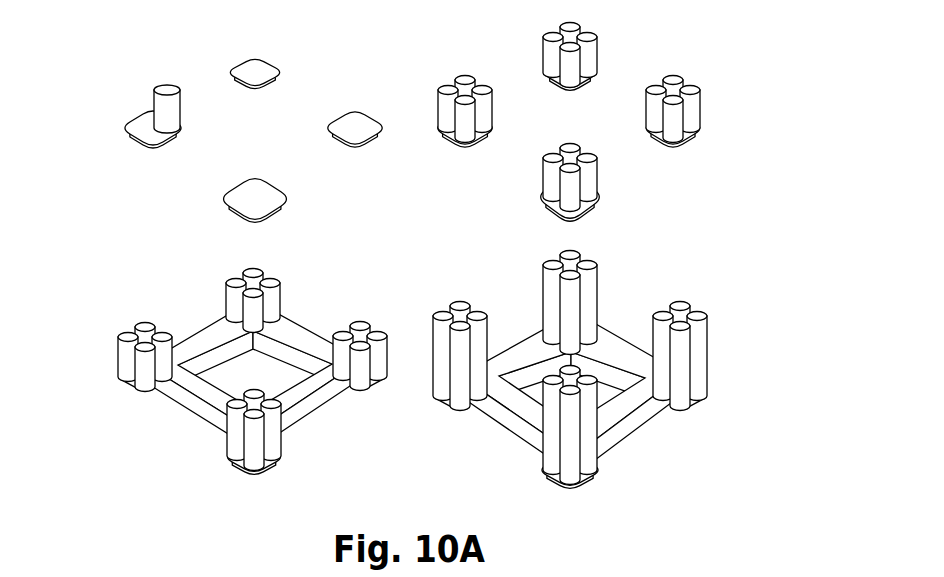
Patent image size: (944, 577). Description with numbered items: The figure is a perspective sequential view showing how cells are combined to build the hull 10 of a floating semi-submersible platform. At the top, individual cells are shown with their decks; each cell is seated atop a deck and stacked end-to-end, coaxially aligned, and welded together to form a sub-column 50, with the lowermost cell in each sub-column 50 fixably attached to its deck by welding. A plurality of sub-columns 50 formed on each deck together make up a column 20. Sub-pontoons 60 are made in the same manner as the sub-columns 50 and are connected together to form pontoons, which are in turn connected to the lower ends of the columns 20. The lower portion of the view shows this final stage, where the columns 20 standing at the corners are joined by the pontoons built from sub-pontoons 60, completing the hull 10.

The hull 10 is at (607, 357).
The column 20 is at (717, 341).
The sub-column 50 is at (692, 312).
The sub-pontoon 60 is at (598, 404).